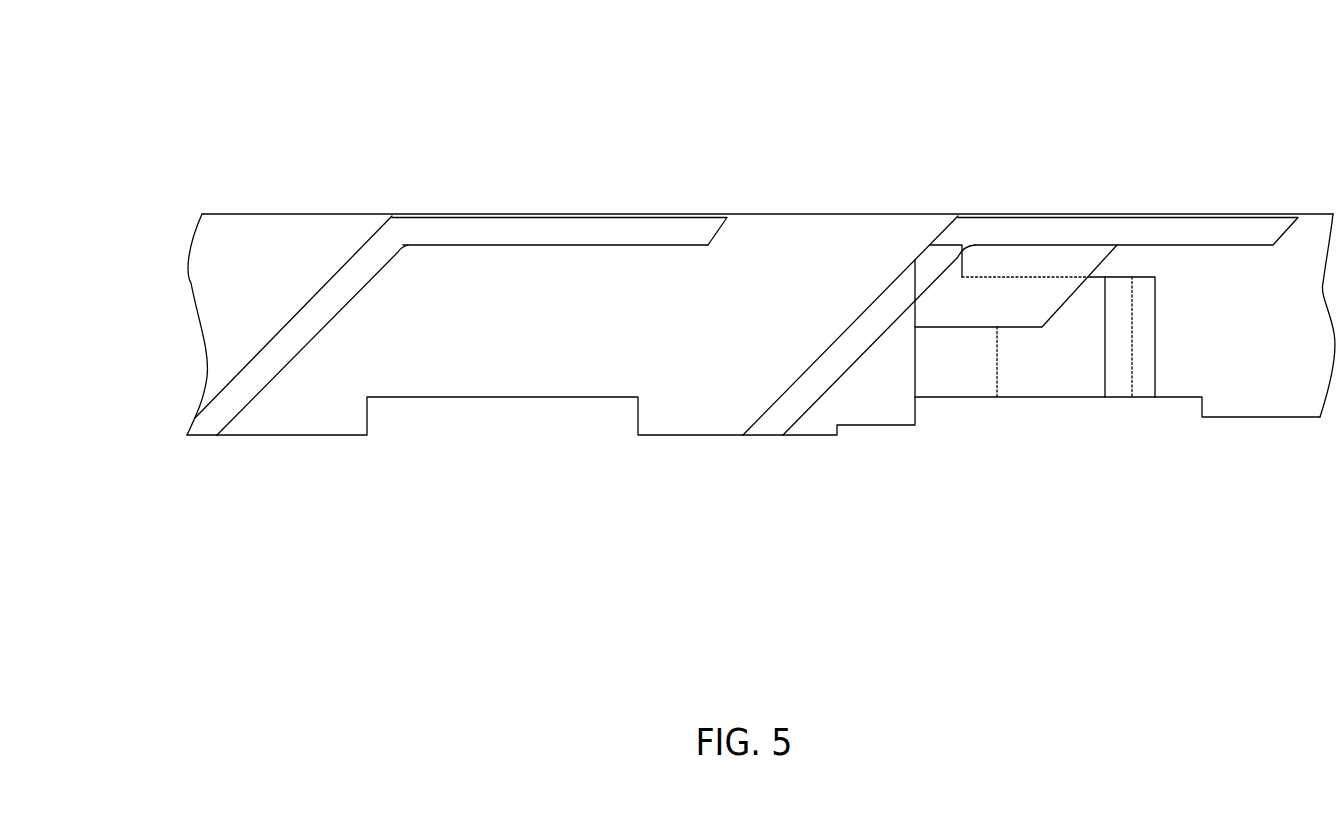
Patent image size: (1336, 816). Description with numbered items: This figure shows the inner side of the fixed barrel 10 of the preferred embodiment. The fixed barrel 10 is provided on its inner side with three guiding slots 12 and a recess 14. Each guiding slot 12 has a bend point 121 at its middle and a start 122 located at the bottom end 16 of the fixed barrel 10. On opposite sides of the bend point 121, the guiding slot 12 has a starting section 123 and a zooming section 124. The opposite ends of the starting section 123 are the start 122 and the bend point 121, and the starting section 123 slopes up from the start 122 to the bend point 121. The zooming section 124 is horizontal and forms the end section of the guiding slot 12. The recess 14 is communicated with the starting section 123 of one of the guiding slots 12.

The fixed barrel 10 is at (187, 143).
The guiding slot 12 is at (312, 60).
The recess 14 is at (1025, 367).
The bottom end 16 is at (300, 437).
The bend point 121 is at (405, 250).
The start 122 is at (202, 437).
The starting section 123 is at (298, 325).
The zooming section 124 is at (498, 228).